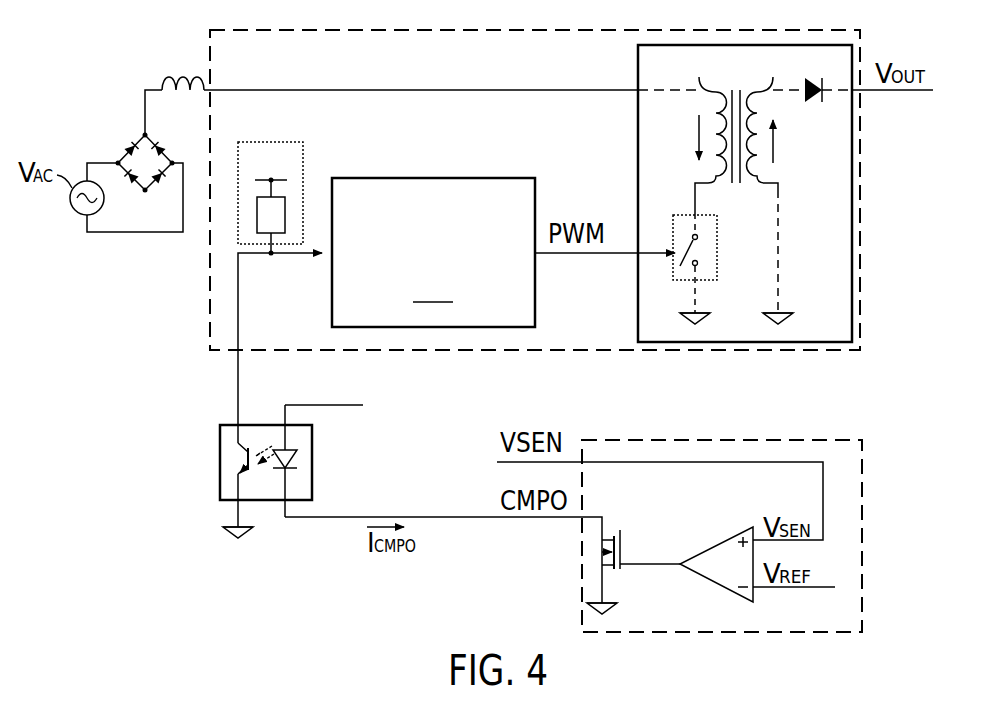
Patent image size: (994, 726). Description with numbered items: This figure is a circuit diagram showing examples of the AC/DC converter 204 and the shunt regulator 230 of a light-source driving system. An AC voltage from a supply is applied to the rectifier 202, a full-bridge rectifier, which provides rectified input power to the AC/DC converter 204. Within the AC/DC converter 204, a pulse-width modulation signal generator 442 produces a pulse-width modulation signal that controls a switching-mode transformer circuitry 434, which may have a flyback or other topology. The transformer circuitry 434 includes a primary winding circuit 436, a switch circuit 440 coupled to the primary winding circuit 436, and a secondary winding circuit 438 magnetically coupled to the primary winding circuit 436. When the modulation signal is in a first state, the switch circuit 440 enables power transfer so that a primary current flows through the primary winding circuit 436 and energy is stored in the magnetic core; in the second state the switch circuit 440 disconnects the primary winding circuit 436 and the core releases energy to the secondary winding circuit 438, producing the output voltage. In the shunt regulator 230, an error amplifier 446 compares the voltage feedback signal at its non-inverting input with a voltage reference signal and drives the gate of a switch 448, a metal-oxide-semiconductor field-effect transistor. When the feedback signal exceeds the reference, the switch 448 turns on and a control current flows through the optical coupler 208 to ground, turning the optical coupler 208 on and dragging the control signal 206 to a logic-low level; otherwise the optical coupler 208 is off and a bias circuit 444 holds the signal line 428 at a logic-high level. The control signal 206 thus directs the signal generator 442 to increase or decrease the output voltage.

The rectifier 202 is at (140, 137).
The AC/DC converter 204 is at (388, 29).
The control signal 206 is at (239, 394).
The optical coupler 208 is at (220, 440).
The shunt regulator 230 is at (828, 440).
The signal line 428 is at (238, 280).
The switching-mode transformer circuitry 434 is at (638, 76).
The primary winding circuit 436 is at (703, 130).
The secondary winding circuit 438 is at (770, 119).
The switch circuit 440 is at (717, 240).
The PWM signal generator 442 is at (433, 252).
The bias circuit 444 is at (290, 142).
The error amplifier 446 is at (700, 573).
The switch 448 is at (618, 545).